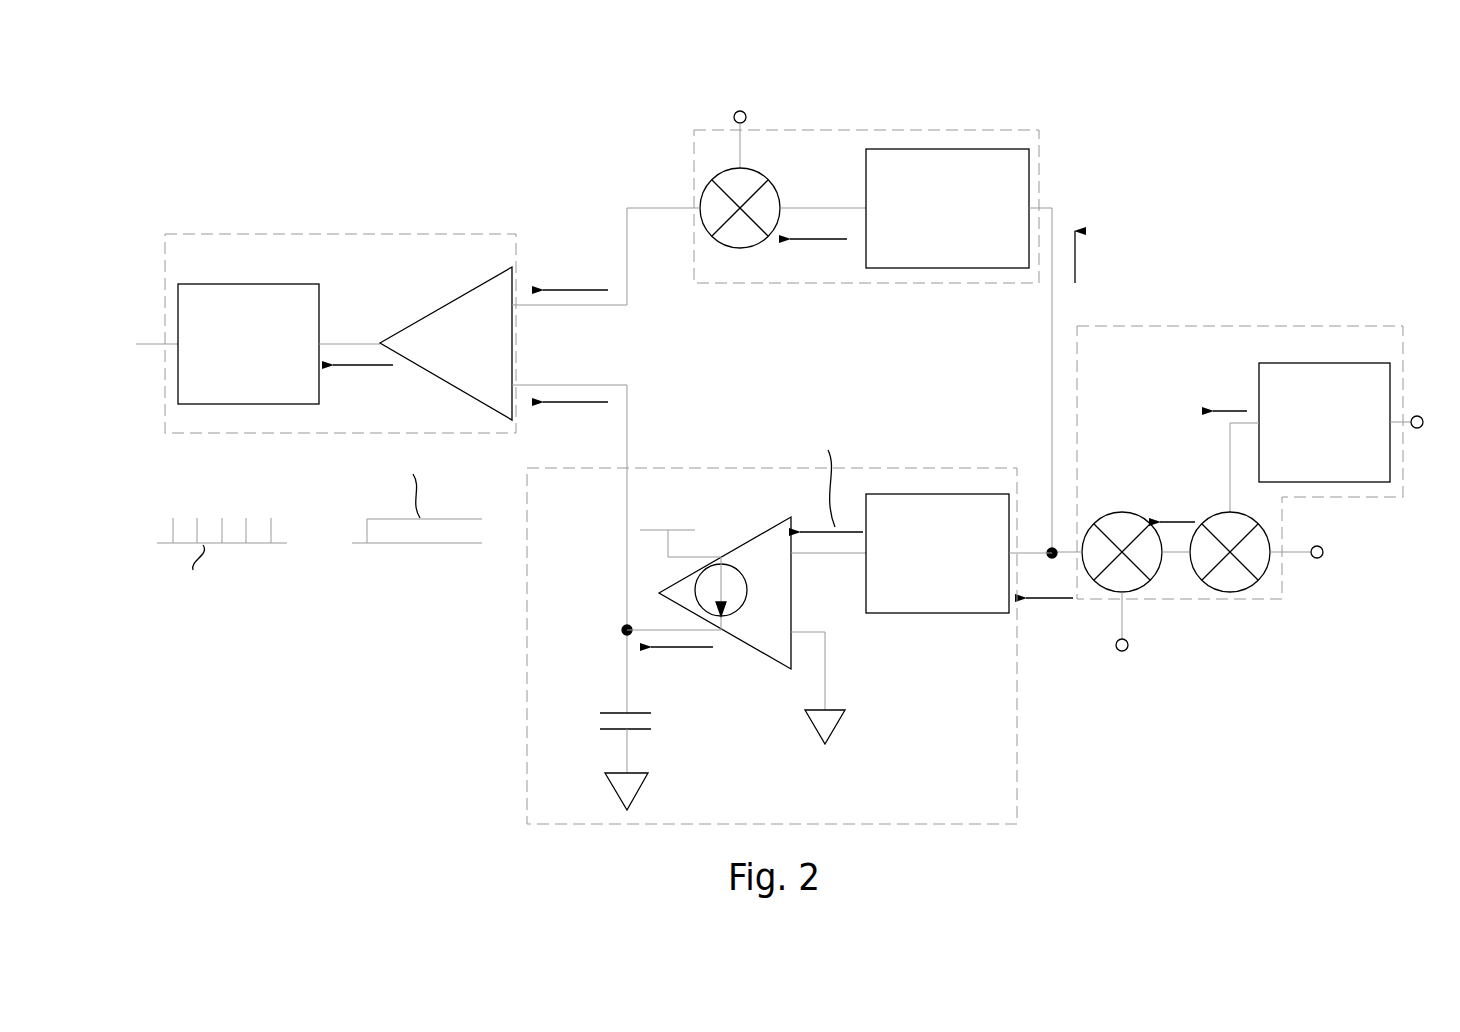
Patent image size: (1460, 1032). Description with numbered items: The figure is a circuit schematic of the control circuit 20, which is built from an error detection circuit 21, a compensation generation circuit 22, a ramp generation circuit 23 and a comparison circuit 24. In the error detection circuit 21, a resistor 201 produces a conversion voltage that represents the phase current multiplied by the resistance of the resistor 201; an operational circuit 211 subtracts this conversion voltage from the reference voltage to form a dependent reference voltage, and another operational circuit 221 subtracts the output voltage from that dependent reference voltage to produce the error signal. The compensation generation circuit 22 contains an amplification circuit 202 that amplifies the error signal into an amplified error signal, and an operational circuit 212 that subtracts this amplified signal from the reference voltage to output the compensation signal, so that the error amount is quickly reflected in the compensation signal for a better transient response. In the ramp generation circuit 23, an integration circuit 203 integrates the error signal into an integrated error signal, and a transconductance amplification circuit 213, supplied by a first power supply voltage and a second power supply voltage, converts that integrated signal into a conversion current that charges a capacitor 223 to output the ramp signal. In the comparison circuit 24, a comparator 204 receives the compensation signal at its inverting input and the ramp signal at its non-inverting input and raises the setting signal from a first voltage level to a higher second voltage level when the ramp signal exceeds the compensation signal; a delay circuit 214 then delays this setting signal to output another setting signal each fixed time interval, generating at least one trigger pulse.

The control circuit 20 is at (176, 79).
The error detection circuit 21 is at (1238, 326).
The compensation generation circuit 22 is at (858, 130).
The ramp generation circuit 23 is at (771, 468).
The comparison circuit 24 is at (337, 234).
The resistor 201 is at (1307, 454).
The amplification circuit 202 is at (930, 254).
The integration circuit 203 is at (920, 599).
The comparator 204 is at (423, 318).
The operational circuit 211 is at (1232, 593).
The operational circuit 212 is at (740, 249).
The transconductance amplification circuit 213 is at (743, 543).
The delay circuit 214 is at (231, 390).
The operational circuit 221 is at (1152, 580).
The capacitor 223 is at (596, 758).